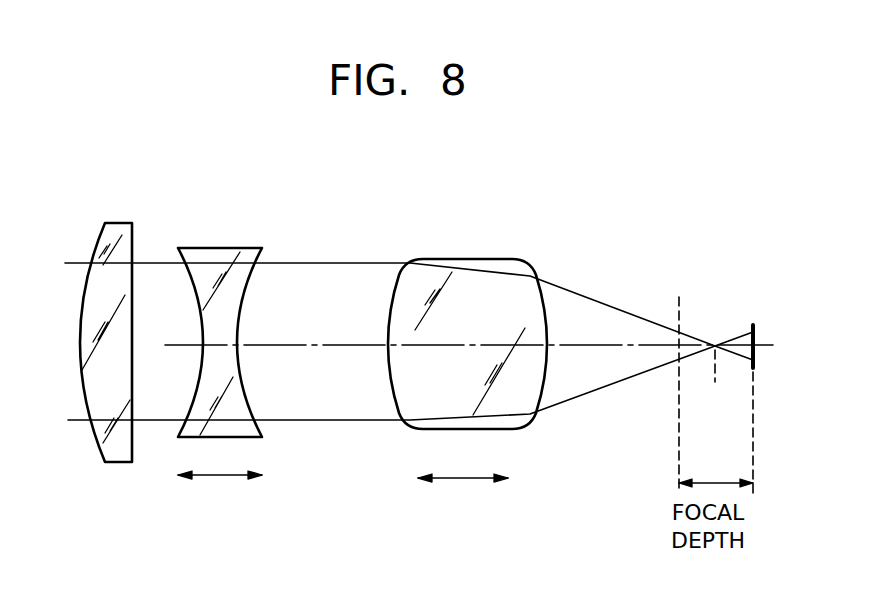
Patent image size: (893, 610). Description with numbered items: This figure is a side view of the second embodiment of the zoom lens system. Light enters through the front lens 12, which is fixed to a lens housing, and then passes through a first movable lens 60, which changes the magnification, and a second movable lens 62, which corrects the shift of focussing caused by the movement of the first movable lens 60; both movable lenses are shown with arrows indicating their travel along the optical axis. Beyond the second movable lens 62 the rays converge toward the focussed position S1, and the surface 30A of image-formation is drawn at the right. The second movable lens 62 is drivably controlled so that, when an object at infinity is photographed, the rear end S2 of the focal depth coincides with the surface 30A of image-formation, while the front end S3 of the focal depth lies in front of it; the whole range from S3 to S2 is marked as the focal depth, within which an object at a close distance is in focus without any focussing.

The front lens 12 is at (120, 223).
The first movable lens 60 is at (220, 248).
The second movable lens 62 is at (477, 259).
The surface of image-formation 30A is at (753, 325).
The focal position S1 is at (713, 386).
The rear end of the focal depth S2 is at (755, 433).
The front end of the focal depth S3 is at (682, 379).